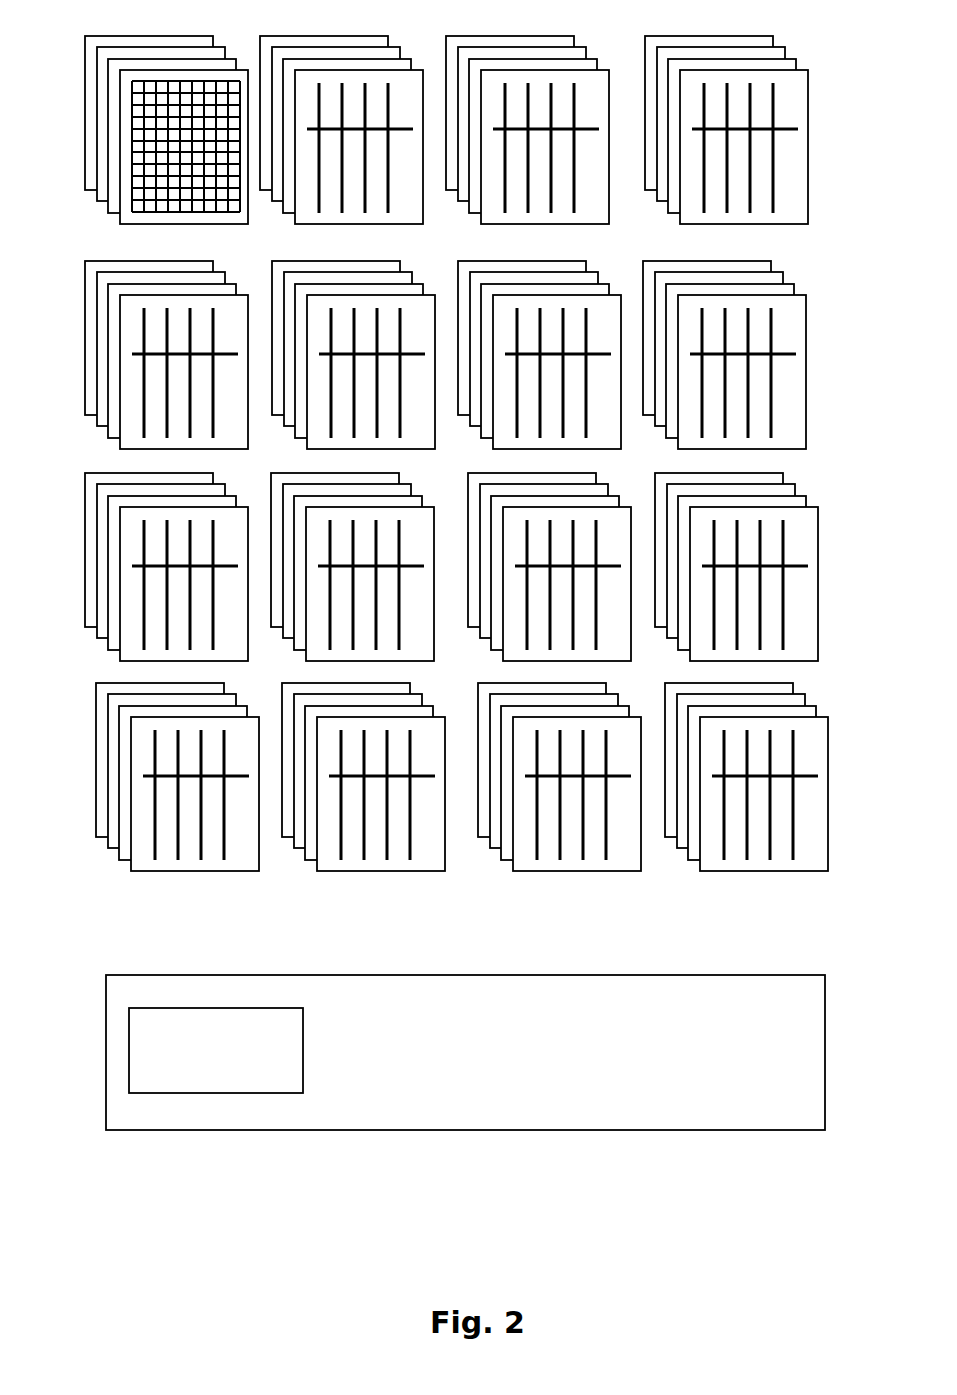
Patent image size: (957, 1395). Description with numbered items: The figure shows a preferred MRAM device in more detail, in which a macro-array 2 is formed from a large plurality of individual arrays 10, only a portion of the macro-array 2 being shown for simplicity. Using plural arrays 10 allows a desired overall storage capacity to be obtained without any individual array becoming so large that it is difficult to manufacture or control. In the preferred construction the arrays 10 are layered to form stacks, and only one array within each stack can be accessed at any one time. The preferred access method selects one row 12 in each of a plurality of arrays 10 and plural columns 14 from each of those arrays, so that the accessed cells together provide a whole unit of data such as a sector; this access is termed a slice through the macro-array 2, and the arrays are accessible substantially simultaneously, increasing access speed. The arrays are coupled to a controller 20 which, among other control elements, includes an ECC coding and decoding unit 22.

The macro-array 2 is at (451, 479).
The array 10 is at (473, 479).
The row 12 is at (795, 131).
The columns 14 is at (773, 86).
The controller 20 is at (465, 1079).
The ECC coding and decoding unit 22 is at (304, 1045).